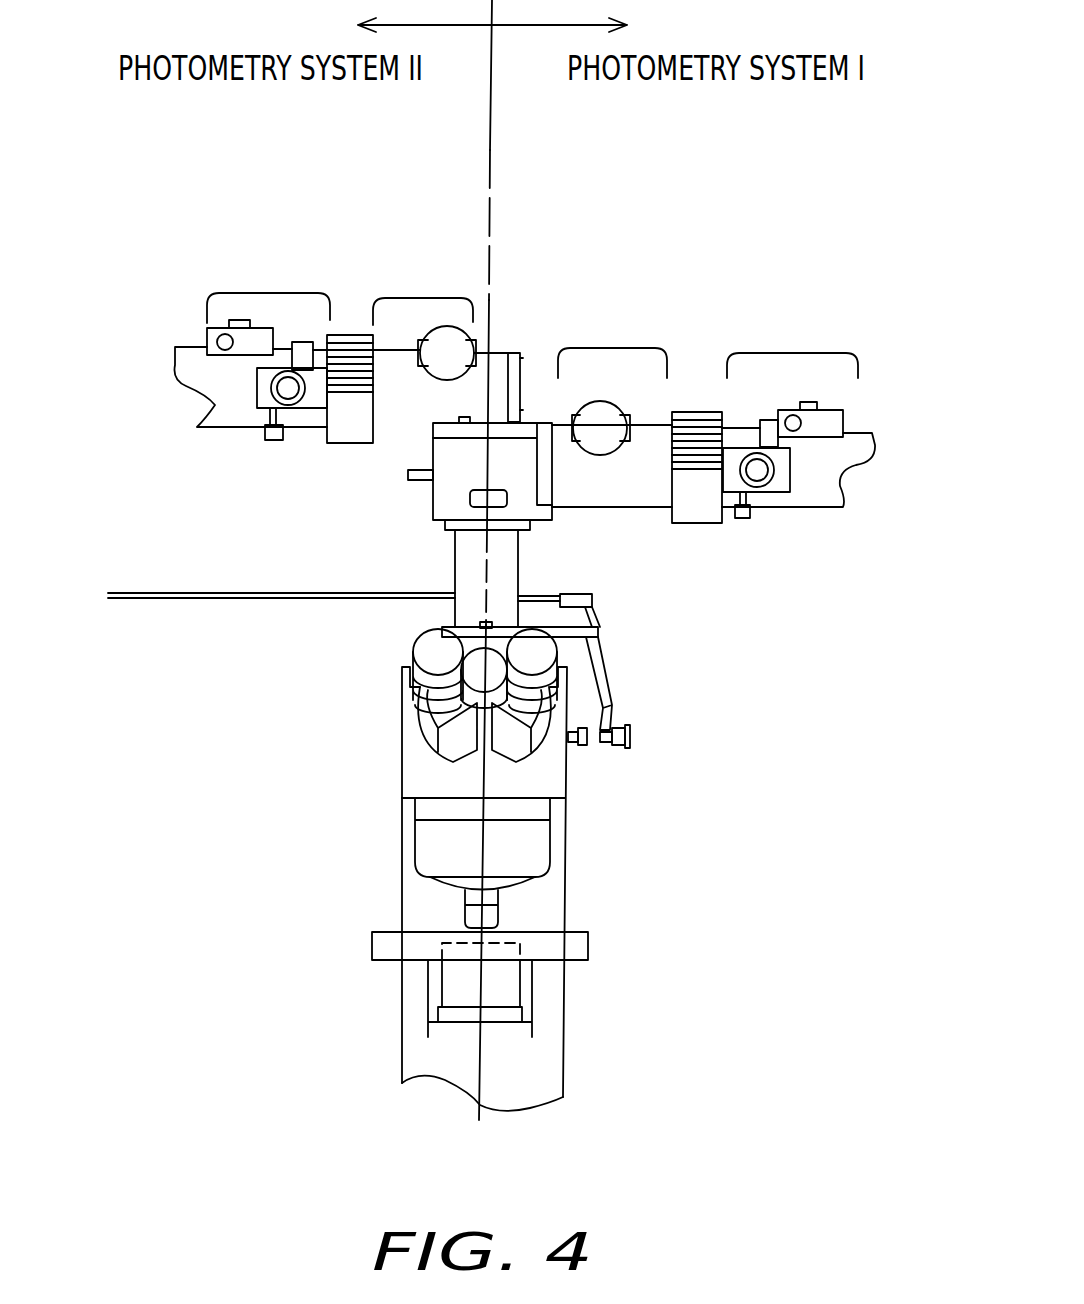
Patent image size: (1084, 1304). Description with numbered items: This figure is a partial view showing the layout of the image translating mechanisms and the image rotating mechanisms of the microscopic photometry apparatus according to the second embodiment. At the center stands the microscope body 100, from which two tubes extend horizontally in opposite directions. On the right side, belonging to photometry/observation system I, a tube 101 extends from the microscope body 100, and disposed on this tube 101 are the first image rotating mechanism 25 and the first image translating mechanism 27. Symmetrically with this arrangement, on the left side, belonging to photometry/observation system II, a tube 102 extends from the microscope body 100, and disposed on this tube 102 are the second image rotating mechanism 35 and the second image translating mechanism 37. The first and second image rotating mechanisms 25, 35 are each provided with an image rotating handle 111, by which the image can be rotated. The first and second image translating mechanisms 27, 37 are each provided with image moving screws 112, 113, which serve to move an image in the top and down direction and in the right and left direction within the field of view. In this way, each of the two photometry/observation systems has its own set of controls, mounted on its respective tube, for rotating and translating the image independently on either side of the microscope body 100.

The microscope body 100 is at (366, 670).
The tube 101 is at (605, 490).
The tube 102 is at (405, 422).
The image rotating handle 111 is at (685, 648).
The image moving screw 112 is at (273, 440).
The image moving screw 113 is at (207, 328).
The first image rotating mechanism 25 is at (627, 331).
The first image translating mechanism 27 is at (812, 339).
The second image rotating mechanism 35 is at (416, 282).
The second image translating mechanism 37 is at (293, 278).